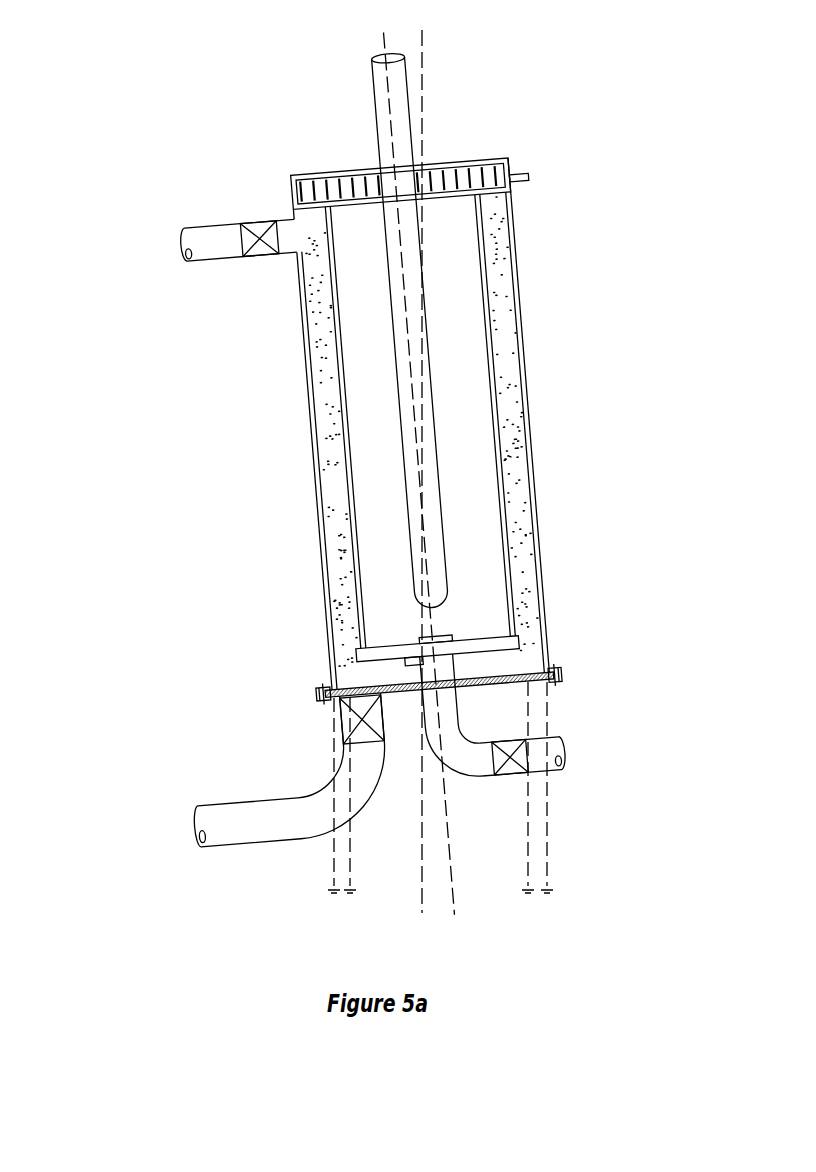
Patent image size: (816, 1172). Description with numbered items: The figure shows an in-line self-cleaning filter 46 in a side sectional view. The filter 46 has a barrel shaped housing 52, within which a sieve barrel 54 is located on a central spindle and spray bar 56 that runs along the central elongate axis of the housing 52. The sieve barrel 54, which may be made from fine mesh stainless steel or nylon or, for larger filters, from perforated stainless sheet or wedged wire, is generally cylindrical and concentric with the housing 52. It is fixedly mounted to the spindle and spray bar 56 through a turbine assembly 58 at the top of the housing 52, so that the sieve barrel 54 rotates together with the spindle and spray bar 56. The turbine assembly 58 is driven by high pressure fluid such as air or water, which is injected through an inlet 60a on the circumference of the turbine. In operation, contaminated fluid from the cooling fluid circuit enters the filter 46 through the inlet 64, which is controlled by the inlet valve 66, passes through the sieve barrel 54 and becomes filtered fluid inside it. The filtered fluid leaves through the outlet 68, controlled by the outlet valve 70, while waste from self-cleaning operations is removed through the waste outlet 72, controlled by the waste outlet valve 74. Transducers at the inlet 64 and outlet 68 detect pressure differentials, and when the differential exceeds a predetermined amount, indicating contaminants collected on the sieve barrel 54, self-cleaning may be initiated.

The filter 46 is at (113, 118).
The barrel shaped housing 52 is at (522, 388).
The sieve barrel 54 is at (495, 440).
The central spindle and spray bar 56 is at (445, 513).
The turbine assembly 58 is at (337, 192).
The inlet 60a is at (513, 168).
The inlet 64 is at (225, 237).
The inlet valve 66 is at (262, 252).
The outlet 68 is at (475, 755).
The outlet valve 70 is at (515, 752).
The waste outlet 72 is at (280, 818).
The waste outlet valve 74 is at (353, 733).